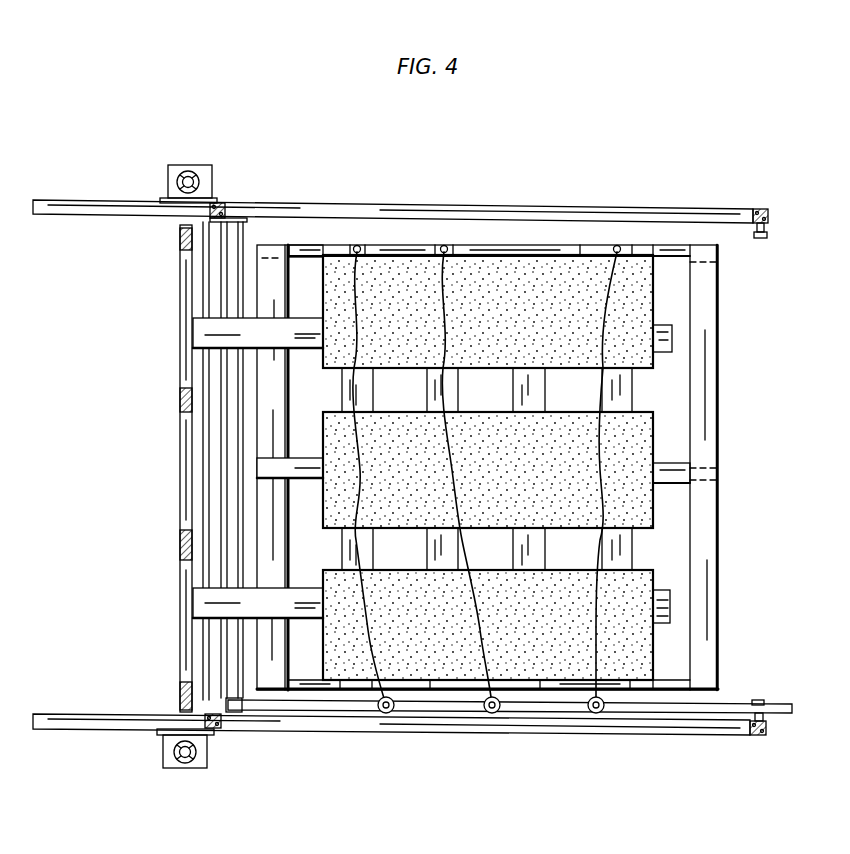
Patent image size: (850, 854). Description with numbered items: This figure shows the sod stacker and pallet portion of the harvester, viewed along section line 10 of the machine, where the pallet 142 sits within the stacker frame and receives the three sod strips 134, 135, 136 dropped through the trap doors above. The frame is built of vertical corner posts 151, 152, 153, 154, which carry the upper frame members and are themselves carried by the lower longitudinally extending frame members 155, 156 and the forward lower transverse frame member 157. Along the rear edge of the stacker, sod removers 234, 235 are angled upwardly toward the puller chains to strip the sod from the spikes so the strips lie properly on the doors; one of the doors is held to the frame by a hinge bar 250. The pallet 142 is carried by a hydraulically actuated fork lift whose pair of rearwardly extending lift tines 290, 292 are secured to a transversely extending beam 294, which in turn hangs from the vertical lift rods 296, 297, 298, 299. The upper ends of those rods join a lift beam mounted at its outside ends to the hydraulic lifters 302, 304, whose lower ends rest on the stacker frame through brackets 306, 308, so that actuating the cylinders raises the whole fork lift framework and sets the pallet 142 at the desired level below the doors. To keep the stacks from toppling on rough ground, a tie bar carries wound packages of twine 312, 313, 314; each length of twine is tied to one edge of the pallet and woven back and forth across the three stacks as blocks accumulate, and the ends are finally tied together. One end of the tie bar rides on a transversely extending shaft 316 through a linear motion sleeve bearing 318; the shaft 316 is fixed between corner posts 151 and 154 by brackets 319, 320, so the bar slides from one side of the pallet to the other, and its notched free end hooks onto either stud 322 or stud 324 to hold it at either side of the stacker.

The section line 10 is at (742, 165).
The pallet 142 is at (747, 575).
The vertical corner post 151 is at (222, 726).
The vertical corner post 152 is at (768, 726).
The vertical corner post 153 is at (768, 218).
The vertical corner post 154 is at (224, 206).
The lower longitudinally extending frame member 155 is at (540, 735).
The lower longitudinally extending frame member 156 is at (520, 209).
The forward lower transverse frame member 157 is at (212, 510).
The sod remover 234 is at (690, 268).
The sod remover 235 is at (668, 466).
The hinge bar 250 is at (622, 392).
The lift tine 290 is at (669, 610).
The lift tine 292 is at (672, 338).
The transversely extending beam 294 is at (182, 472).
The vertical lift rod 296 is at (180, 692).
The vertical lift rod 297 is at (180, 547).
The vertical lift rod 298 is at (180, 402).
The vertical lift rod 299 is at (179, 241).
The hydraulic lifter 302 is at (180, 762).
The hydraulic lifter 304 is at (188, 171).
The bracket 306 is at (210, 758).
The bracket 308 is at (210, 176).
The wound package of twine 312 is at (386, 714).
The wound package of twine 313 is at (492, 714).
The wound package of twine 314 is at (596, 714).
The transversely extending shaft 316 is at (235, 637).
The linear motion sleeve bearing 318 is at (232, 698).
The bracket 319 is at (247, 713).
The bracket 320 is at (240, 222).
The stud 322 is at (758, 699).
The stud 324 is at (761, 238).
The block of sod 134 is at (546, 635).
The block of sod 135 is at (546, 476).
The block of sod 136 is at (546, 316).